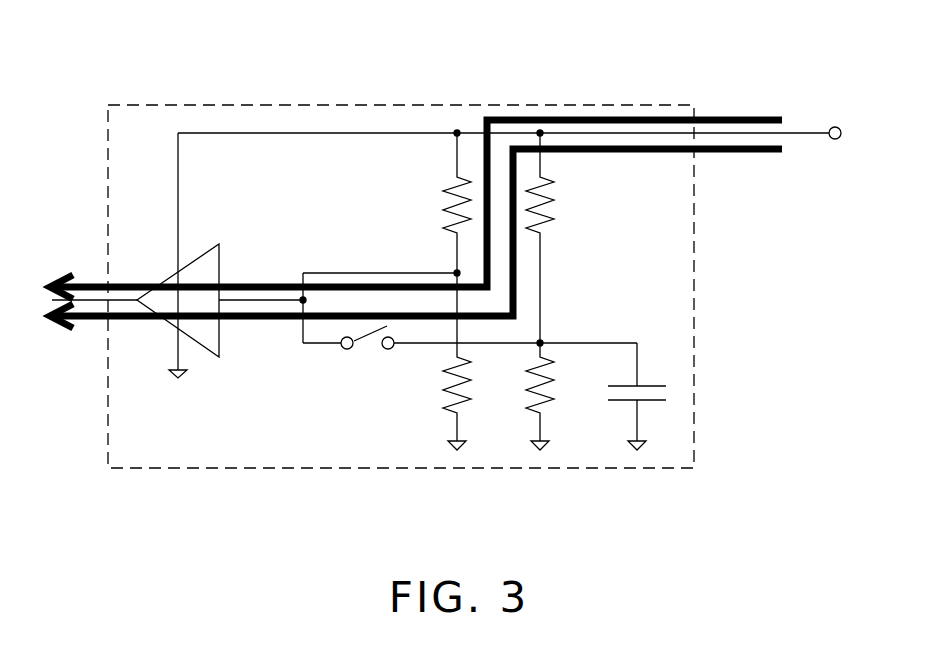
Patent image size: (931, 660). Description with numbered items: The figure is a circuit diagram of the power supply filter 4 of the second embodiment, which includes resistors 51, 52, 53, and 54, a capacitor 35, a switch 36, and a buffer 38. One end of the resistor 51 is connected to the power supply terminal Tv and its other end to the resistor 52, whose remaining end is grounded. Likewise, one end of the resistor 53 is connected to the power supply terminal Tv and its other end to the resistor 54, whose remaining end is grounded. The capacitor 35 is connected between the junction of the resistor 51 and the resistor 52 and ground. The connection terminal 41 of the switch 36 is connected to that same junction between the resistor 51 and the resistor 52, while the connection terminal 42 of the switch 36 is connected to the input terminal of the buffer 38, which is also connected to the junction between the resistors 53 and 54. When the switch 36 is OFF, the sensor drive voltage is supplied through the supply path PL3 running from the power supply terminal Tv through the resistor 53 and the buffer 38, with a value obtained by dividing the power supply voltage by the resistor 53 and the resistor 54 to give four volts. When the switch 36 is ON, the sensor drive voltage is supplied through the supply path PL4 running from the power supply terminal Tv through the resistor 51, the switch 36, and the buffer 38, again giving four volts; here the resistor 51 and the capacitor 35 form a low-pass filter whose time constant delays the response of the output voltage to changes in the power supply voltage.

The power supply filter 4 is at (107, 131).
The buffer 38 is at (197, 257).
The resistor 53 is at (447, 208).
The resistor 51 is at (547, 215).
The connection terminal 42 is at (340, 348).
The switch 36 is at (361, 339).
The connection terminal 41 is at (388, 350).
The resistor 54 is at (452, 393).
The resistor 52 is at (552, 398).
The capacitor 35 is at (652, 384).
The supply path PL3 is at (727, 117).
The supply path PL4 is at (726, 153).
The power supply terminal Tv is at (833, 140).